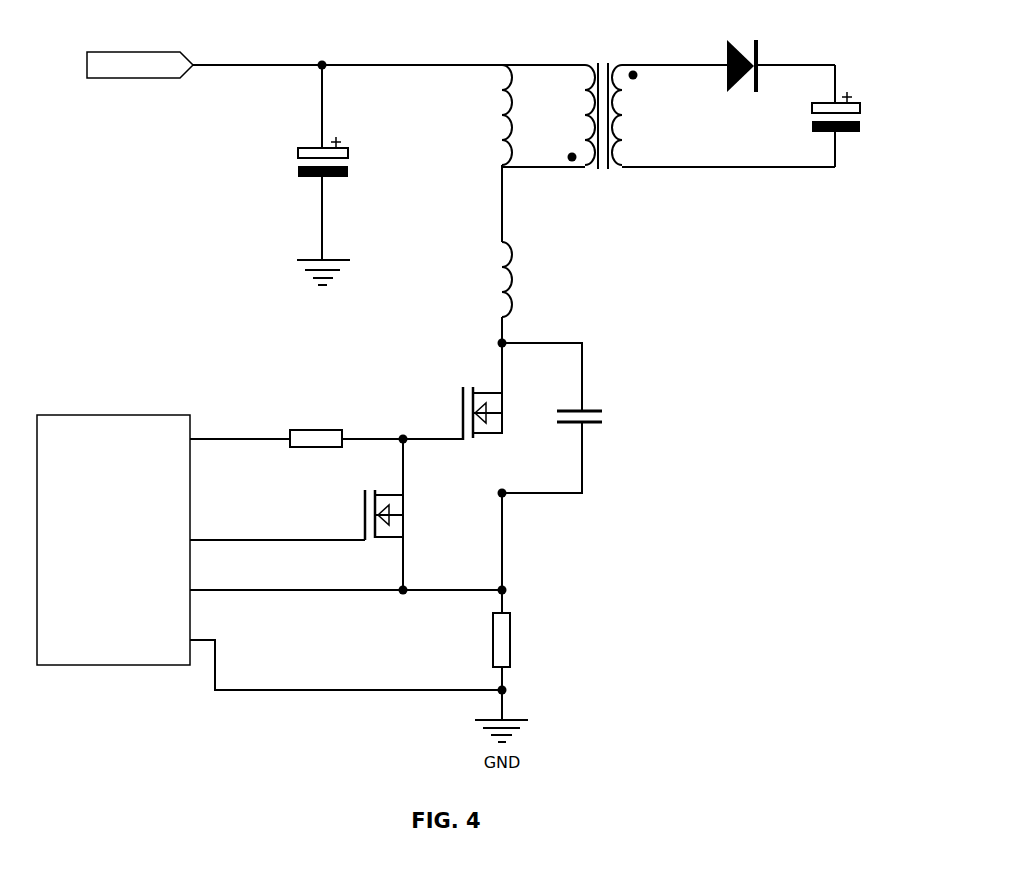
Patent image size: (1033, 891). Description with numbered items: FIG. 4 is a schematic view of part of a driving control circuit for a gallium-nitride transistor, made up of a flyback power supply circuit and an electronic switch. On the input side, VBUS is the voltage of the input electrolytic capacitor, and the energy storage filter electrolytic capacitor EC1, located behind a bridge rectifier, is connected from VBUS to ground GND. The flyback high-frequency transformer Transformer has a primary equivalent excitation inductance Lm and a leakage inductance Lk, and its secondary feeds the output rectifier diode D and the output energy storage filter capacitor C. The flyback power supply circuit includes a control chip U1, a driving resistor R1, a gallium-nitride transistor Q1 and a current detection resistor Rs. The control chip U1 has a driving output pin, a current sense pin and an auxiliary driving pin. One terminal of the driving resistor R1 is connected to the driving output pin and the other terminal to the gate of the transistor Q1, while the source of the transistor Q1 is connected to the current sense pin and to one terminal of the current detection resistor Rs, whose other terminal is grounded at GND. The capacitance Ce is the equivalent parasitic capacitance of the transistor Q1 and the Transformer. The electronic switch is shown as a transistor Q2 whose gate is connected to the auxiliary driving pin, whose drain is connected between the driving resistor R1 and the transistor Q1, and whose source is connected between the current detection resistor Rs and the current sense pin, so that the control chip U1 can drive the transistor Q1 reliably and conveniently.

The voltage of input electrolytic capacitor VBUS is at (140, 65).
The energy storage filter electrolytic capacitor EC1 is at (346, 162).
The ground GND is at (323, 285).
The flyback high-frequency transformer Transformer is at (647, 98).
The primary equivalent excitation inductance Lm is at (486, 115).
The output rectifier diode D is at (781, 54).
The output energy storage filter capacitor C is at (816, 116).
The leakage inductance Lk is at (523, 255).
The equivalent parasitic capacitance Ce is at (566, 418).
The GaN transistor Q1 is at (452, 391).
The transistor Q2 is at (296, 514).
The driving resistor R1 is at (296, 426).
The control chip U1 is at (113, 530).
The current detection resistor Rs is at (518, 640).